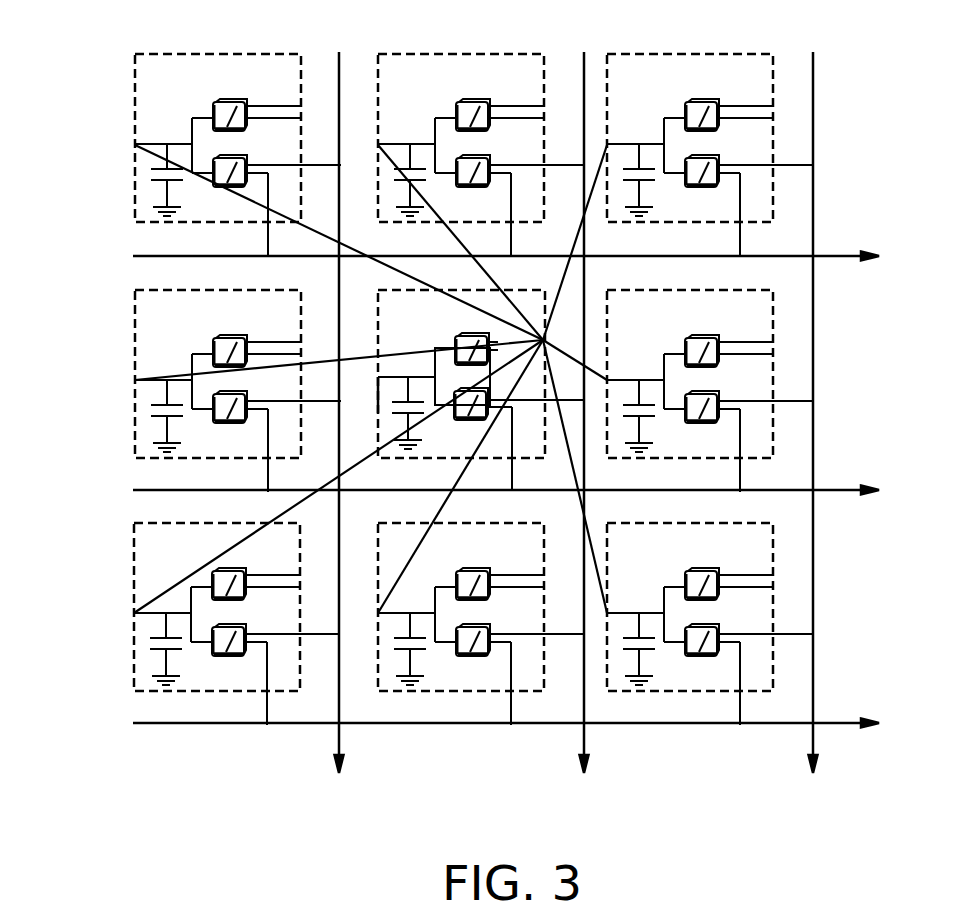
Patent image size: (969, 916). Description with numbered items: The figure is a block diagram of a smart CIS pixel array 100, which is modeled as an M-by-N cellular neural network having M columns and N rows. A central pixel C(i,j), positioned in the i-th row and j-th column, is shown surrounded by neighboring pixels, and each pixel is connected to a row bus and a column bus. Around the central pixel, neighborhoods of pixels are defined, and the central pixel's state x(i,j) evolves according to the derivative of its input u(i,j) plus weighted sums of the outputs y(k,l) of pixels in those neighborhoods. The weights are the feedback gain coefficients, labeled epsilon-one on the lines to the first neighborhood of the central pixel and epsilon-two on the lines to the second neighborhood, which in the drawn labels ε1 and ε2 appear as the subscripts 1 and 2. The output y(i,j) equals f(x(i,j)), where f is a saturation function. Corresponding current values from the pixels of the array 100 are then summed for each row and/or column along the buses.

The smart CIS pixel array 100 is at (872, 103).
The epsilon-1 weight (diagonal neighbour coupling) 1 is at (370, 379).
The epsilon-2 weight (adjacent neighbour coupling) 2 is at (371, 379).